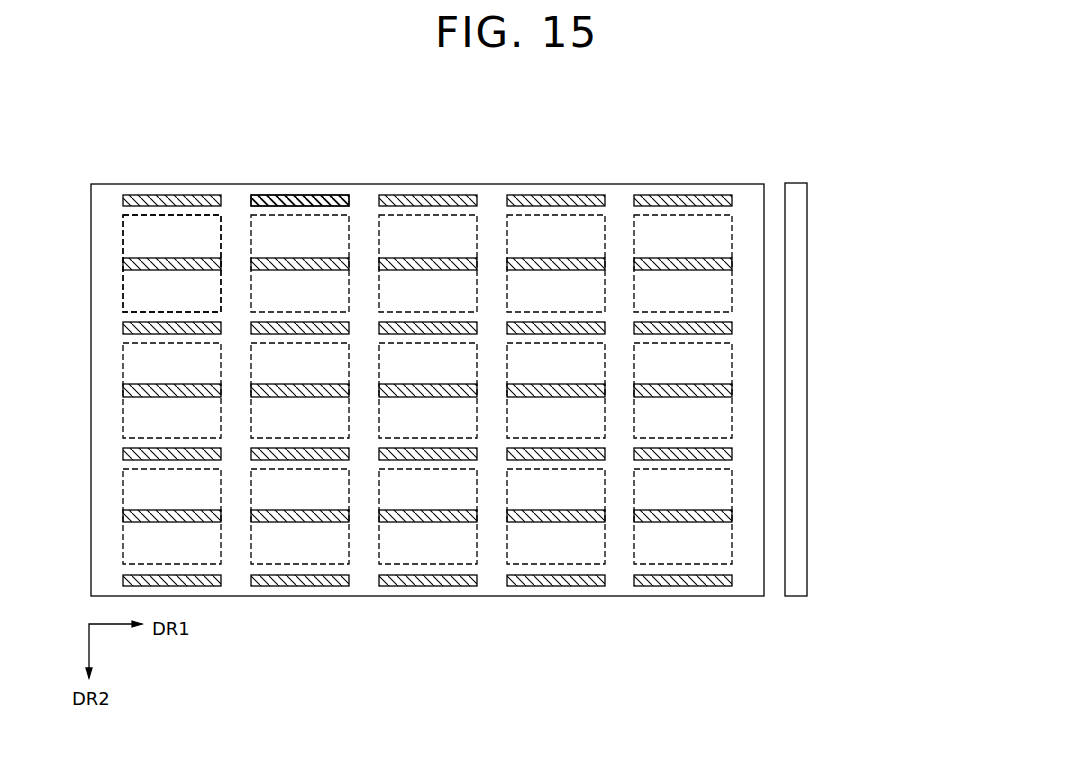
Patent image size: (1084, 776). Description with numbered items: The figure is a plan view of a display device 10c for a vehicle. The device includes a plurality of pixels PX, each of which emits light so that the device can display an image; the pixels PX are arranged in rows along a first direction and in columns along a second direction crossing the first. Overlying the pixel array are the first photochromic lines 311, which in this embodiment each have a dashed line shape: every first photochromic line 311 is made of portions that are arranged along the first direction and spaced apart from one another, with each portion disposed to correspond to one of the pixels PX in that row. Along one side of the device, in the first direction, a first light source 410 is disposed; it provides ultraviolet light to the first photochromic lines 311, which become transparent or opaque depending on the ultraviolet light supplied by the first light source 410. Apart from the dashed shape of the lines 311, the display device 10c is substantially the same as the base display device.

The display device 10c is at (835, 172).
The pixel PX is at (177, 215).
The first photochromic line 311 is at (302, 198).
The first light source 410 is at (798, 183).